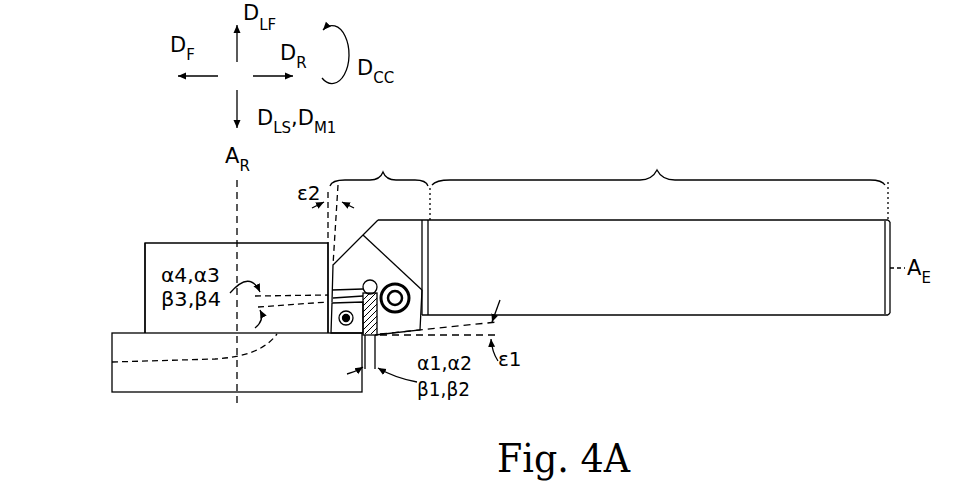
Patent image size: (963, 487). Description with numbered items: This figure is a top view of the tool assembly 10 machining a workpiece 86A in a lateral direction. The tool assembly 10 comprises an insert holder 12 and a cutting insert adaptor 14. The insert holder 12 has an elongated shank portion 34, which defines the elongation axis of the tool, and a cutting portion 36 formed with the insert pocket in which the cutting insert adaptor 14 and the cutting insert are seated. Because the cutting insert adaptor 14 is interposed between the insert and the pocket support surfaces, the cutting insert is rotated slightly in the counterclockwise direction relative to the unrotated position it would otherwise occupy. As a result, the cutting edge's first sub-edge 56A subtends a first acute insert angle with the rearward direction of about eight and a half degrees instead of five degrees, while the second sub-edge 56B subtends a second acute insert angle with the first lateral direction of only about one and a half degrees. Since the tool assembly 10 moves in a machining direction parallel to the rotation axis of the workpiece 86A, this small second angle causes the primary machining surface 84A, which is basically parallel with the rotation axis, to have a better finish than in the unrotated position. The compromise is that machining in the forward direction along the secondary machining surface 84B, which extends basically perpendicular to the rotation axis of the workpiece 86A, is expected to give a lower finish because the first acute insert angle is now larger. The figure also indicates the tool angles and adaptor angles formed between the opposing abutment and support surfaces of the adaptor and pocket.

The tool assembly 10 is at (793, 110).
The insert holder 12 is at (645, 302).
The cutting insert adaptor 14 is at (363, 290).
The elongated shank portion 34 is at (660, 181).
The cutting portion 36 is at (380, 228).
The first sub-edge 56A is at (345, 335).
The second sub-edge 56B is at (326, 322).
The primary machining surface 84A is at (145, 267).
The secondary machining surface 84B is at (127, 332).
The workpiece 86A is at (180, 222).